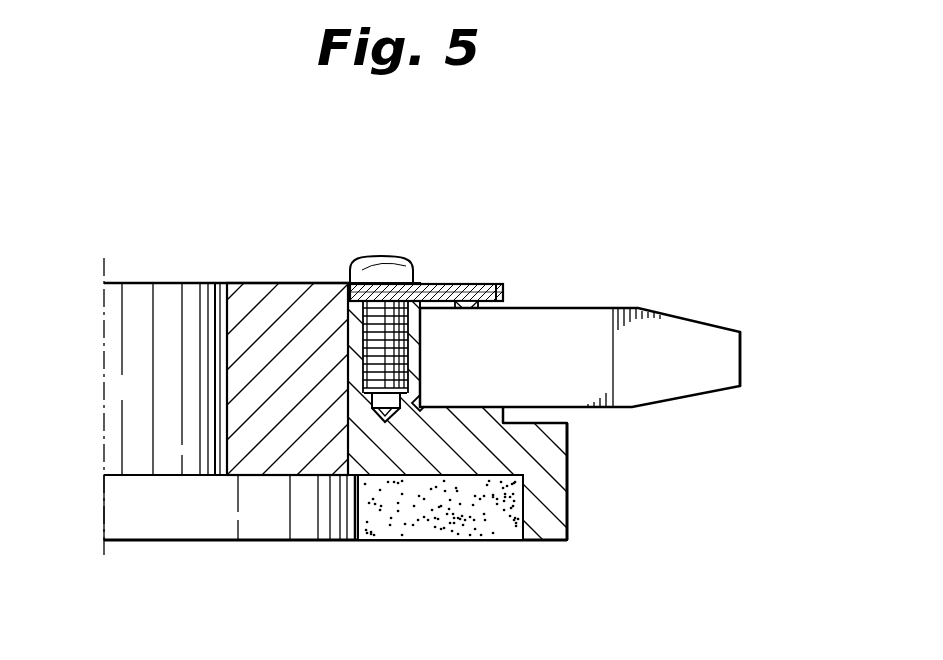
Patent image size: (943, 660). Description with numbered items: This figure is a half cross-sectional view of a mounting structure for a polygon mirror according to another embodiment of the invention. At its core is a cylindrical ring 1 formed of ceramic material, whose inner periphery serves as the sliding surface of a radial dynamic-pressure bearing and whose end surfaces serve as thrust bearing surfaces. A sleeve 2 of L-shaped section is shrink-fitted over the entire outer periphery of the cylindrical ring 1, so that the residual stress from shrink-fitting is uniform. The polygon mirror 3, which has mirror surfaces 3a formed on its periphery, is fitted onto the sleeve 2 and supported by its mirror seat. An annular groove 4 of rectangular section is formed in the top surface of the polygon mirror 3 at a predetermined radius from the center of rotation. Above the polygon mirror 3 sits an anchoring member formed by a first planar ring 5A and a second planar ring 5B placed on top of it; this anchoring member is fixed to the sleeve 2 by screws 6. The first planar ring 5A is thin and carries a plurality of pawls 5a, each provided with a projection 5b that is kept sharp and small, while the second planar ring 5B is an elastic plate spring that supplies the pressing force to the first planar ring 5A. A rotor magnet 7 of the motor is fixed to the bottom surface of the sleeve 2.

The cylindrical ring 1 is at (273, 307).
The sleeve 2 is at (560, 483).
The polygon mirror 3 is at (595, 318).
The mirror surfaces 3a is at (742, 343).
The annular groove 4 is at (478, 318).
The first planar ring 5A is at (450, 284).
The second planar ring 5B is at (423, 284).
The pawls 5a is at (497, 285).
The projection 5b is at (457, 323).
The screws 6 is at (363, 267).
The rotor magnet 7 is at (503, 517).